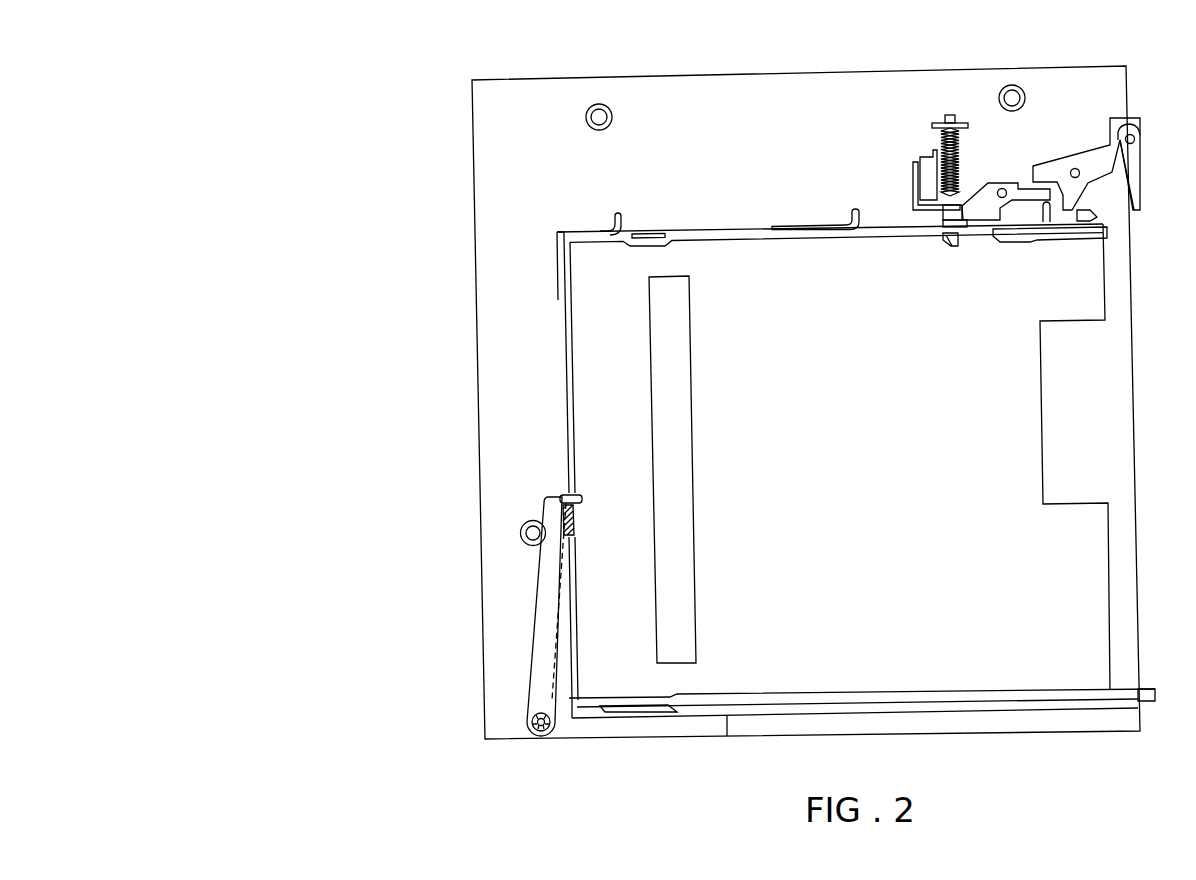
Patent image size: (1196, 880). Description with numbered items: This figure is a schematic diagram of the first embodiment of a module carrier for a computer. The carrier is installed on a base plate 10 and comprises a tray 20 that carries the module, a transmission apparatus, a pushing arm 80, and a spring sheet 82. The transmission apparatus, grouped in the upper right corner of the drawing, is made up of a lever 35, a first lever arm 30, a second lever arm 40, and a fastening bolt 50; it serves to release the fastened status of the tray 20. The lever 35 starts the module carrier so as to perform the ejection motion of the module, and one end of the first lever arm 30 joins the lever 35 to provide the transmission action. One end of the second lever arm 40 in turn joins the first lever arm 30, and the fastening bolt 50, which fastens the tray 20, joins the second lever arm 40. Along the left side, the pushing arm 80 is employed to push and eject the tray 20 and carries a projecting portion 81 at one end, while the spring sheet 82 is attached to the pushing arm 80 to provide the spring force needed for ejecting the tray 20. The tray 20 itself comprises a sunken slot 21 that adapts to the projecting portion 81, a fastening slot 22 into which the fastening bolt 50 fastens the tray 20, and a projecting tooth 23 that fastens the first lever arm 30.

The base plate 10 is at (547, 105).
The tray 20 is at (1081, 612).
The sunken slot 21 is at (578, 500).
The fastening slot 22 is at (936, 256).
The projecting tooth 23 is at (1088, 218).
The first lever arm 30 is at (1097, 160).
The lever 35 is at (1135, 177).
The second lever arm 40 is at (1005, 172).
The fastening bolt 50 is at (972, 191).
The pushing arm 80 is at (545, 660).
The projecting portion 81 is at (558, 498).
The spring sheet 82 is at (558, 730).